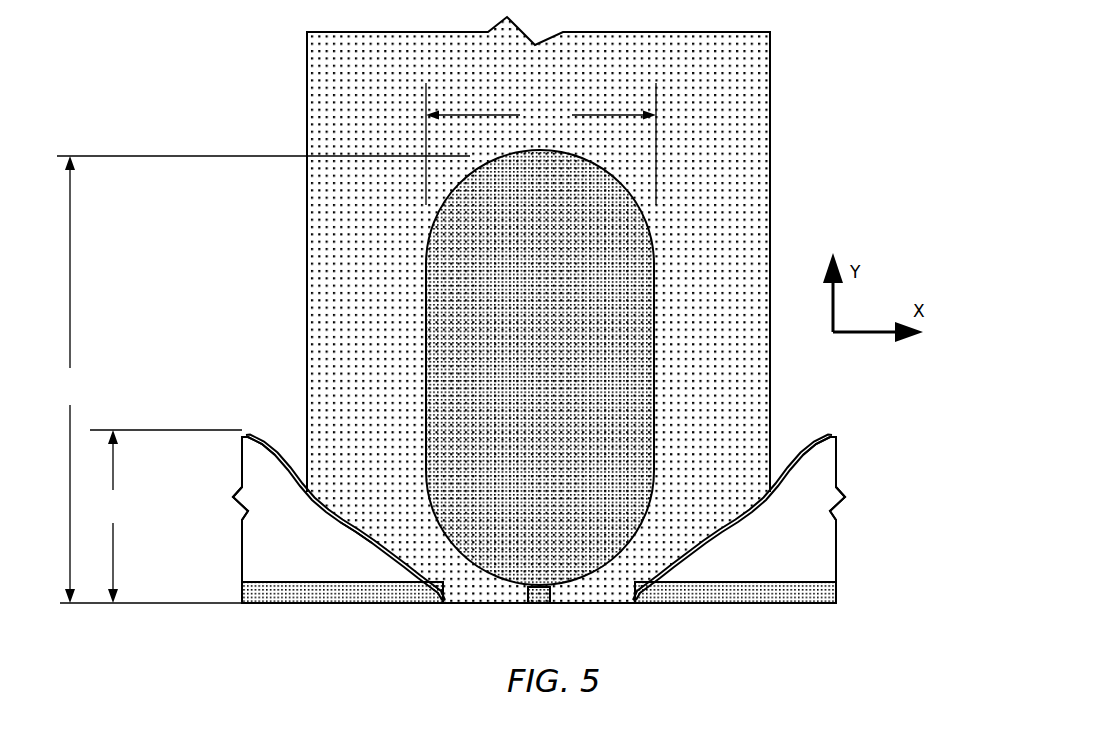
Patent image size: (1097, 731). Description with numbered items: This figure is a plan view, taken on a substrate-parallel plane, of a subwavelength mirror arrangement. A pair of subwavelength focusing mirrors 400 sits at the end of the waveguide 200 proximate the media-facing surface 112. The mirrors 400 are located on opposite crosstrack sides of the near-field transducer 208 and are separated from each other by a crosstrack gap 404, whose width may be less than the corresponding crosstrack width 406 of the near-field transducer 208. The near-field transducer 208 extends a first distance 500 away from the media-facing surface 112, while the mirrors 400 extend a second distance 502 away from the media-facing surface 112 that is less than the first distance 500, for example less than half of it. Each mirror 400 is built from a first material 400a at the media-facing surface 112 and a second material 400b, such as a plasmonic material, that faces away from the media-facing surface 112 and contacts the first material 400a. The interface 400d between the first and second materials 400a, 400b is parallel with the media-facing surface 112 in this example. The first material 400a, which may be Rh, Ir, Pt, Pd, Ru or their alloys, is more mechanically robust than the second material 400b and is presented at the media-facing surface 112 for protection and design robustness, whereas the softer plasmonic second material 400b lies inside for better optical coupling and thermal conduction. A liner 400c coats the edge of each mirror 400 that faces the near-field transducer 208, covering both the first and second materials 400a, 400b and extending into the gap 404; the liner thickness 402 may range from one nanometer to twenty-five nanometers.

The waveguide 200 is at (307, 126).
The near-field transducer 208 is at (358, 312).
The crosstrack width 406 is at (541, 144).
The first distance 500 is at (263, 379).
The second distance 502 is at (166, 516).
The media-facing surface 112 is at (180, 603).
The subwavelength focusing mirrors 400 is at (241, 453).
The first material 400a is at (241, 588).
The second material 400b is at (241, 528).
The liner 400c is at (246, 436).
The interface 400d is at (307, 583).
The liner thickness 402 is at (350, 544).
The crosstrack gap 404 is at (482, 598).